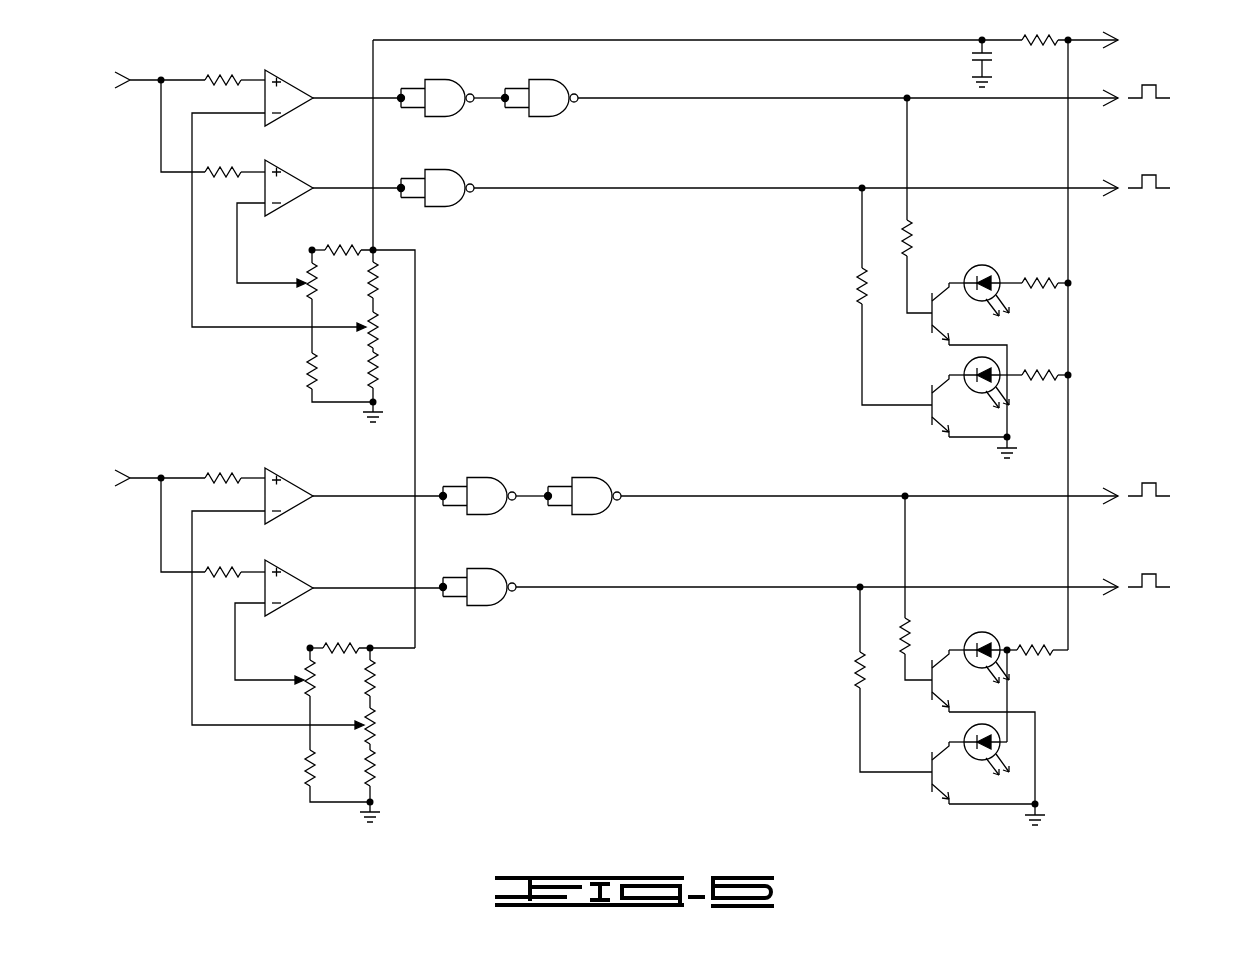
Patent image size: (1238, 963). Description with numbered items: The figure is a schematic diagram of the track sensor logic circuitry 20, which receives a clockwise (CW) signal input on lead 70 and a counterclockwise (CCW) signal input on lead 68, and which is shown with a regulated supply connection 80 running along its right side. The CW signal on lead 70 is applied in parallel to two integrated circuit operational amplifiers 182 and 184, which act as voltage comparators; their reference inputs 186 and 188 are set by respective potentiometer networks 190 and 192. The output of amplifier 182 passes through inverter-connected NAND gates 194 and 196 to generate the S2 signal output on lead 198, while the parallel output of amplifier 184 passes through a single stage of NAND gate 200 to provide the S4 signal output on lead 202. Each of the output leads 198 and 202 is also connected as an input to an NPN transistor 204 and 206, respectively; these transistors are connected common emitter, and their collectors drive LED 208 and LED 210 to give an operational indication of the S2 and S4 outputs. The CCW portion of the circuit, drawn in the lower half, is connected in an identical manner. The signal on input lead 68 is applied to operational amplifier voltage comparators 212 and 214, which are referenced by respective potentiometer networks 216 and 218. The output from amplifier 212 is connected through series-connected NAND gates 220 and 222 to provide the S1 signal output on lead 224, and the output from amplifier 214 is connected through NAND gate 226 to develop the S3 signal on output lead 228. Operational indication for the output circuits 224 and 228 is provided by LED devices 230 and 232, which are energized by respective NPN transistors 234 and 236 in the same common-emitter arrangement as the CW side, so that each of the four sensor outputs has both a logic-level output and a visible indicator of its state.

The track sensor logic circuitry 20 is at (860, 38).
The lead 68 is at (145, 478).
The lead 70 is at (136, 80).
The regulated voltage line 80 is at (1082, 40).
The operational amplifier 182 is at (292, 85).
The operational amplifier 184 is at (292, 175).
The reference input 186 is at (192, 134).
The reference input 188 is at (238, 248).
The potentiometer network 190 is at (303, 338).
The potentiometer network 192 is at (366, 348).
The NAND gate 194 is at (440, 80).
The NAND gate 196 is at (555, 80).
The lead 198 is at (1083, 100).
The NAND gate 200 is at (447, 182).
The lead 202 is at (1083, 188).
The NPN transistor 204 is at (936, 317).
The NPN transistor 206 is at (936, 409).
The LED 208 is at (982, 265).
The LED 210 is at (996, 361).
The operational amplifier voltage comparator 212 is at (290, 483).
The operational amplifier voltage comparator 214 is at (292, 573).
The potentiometer network 216 is at (303, 742).
The potentiometer network 218 is at (362, 748).
The NAND gate 220 is at (486, 478).
The NAND gate 222 is at (598, 478).
The lead 224 is at (1090, 498).
The NAND gate 226 is at (493, 570).
The output lead 228 is at (1083, 590).
The LED device 230 is at (982, 632).
The LED device 232 is at (992, 725).
The NPN transistor 234 is at (933, 688).
The NPN transistor 236 is at (933, 779).